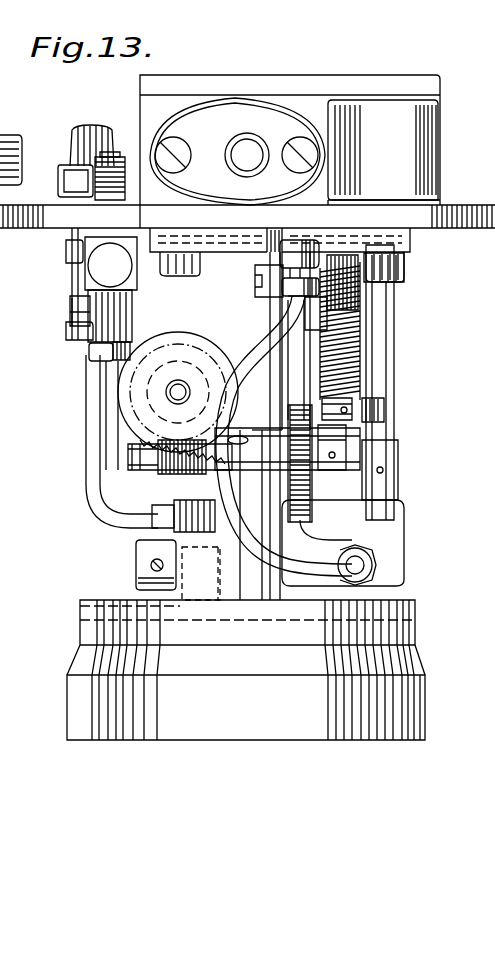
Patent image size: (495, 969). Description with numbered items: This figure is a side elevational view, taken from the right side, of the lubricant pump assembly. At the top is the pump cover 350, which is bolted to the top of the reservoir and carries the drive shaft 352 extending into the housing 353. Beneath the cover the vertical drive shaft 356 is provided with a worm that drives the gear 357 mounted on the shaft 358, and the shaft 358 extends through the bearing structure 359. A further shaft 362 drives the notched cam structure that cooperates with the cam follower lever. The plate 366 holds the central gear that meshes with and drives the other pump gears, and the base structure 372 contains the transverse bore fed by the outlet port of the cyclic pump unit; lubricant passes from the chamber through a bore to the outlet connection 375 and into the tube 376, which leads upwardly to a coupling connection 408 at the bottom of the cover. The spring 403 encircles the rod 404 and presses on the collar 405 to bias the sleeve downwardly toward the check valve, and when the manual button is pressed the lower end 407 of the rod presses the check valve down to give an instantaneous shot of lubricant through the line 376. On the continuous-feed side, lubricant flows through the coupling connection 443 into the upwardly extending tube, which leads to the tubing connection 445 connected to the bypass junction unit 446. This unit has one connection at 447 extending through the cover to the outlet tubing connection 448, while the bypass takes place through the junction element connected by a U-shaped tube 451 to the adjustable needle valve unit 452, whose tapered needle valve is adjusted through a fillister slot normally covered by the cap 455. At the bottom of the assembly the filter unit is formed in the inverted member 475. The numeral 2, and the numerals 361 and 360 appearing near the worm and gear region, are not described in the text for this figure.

The fitting 2 is at (11, 136).
The cap 455 is at (70, 139).
The outlet tubing connection 448 is at (128, 140).
The housing 353 is at (358, 115).
The drive shaft 352 is at (247, 150).
The pump cover 350 is at (394, 208).
The connection 447 is at (147, 228).
The coupling connection 408 is at (317, 218).
The bypass junction unit 446 is at (92, 308).
The adjustable needle valve unit 452 is at (72, 318).
The tubing connection 445 is at (96, 348).
The U-shaped tube 451 is at (85, 399).
The gear teeth 361 is at (148, 433).
The shaft 358 is at (135, 460).
The worm 360 is at (180, 480).
The coupling connection 443 is at (155, 530).
The shaft 362 is at (178, 390).
The lower end of rod 407 is at (287, 300).
The tube 376 is at (262, 352).
The vertical drive shaft 356 is at (303, 372).
The spring 403 is at (355, 305).
The rod 404 is at (362, 346).
The collar 405 is at (372, 418).
The bearing structure 359 is at (256, 462).
The gear 357 is at (305, 502).
The base structure 372 is at (398, 500).
The outlet connection 375 is at (380, 560).
The plate 366 is at (412, 636).
The inverted member 475 is at (412, 690).